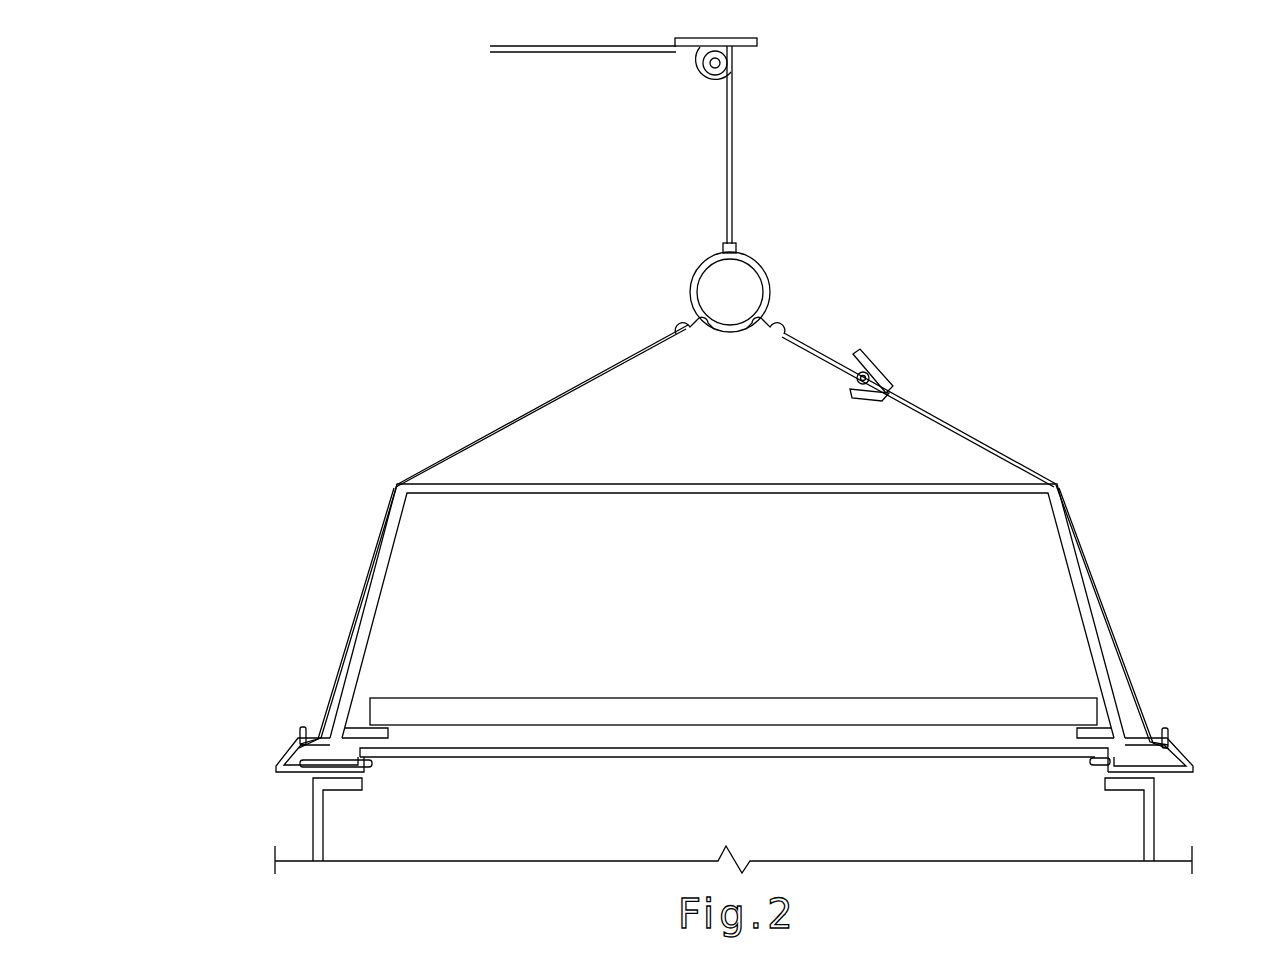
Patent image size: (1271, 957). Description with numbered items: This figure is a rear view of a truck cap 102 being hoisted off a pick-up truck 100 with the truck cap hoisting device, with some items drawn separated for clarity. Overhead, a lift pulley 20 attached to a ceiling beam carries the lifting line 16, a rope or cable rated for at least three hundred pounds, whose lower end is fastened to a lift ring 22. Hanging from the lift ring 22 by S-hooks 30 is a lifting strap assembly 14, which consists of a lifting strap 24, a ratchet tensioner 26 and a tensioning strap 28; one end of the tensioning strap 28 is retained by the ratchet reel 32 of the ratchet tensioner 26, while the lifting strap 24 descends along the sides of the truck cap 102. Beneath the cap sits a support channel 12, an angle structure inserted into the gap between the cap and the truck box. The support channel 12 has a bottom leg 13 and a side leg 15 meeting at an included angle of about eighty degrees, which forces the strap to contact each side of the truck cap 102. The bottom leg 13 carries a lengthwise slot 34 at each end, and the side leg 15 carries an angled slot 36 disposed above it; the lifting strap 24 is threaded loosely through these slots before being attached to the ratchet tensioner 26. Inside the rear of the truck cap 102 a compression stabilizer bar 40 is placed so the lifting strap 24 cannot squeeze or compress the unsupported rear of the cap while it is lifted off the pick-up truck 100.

The support channel 12 is at (295, 768).
The bottom leg 13 is at (368, 768).
The lifting strap assembly 14 is at (672, 591).
The side leg 15 is at (295, 738).
The lifting line 16 is at (735, 225).
The lift pulley 20 is at (706, 74).
The lift ring 22 is at (690, 278).
The lifting strap 24 is at (478, 440).
The ratchet tensioner 26 is at (880, 362).
The tensioning strap 28 is at (820, 352).
The S-hook 30 is at (676, 322).
The ratchet reel 32 is at (856, 381).
The lengthwise slot 34 is at (1103, 763).
The angled slot 36 is at (1170, 735).
The compression stabilizer bar 40 is at (700, 698).
The pick-up truck 100 is at (313, 828).
The truck cap 102 is at (697, 484).